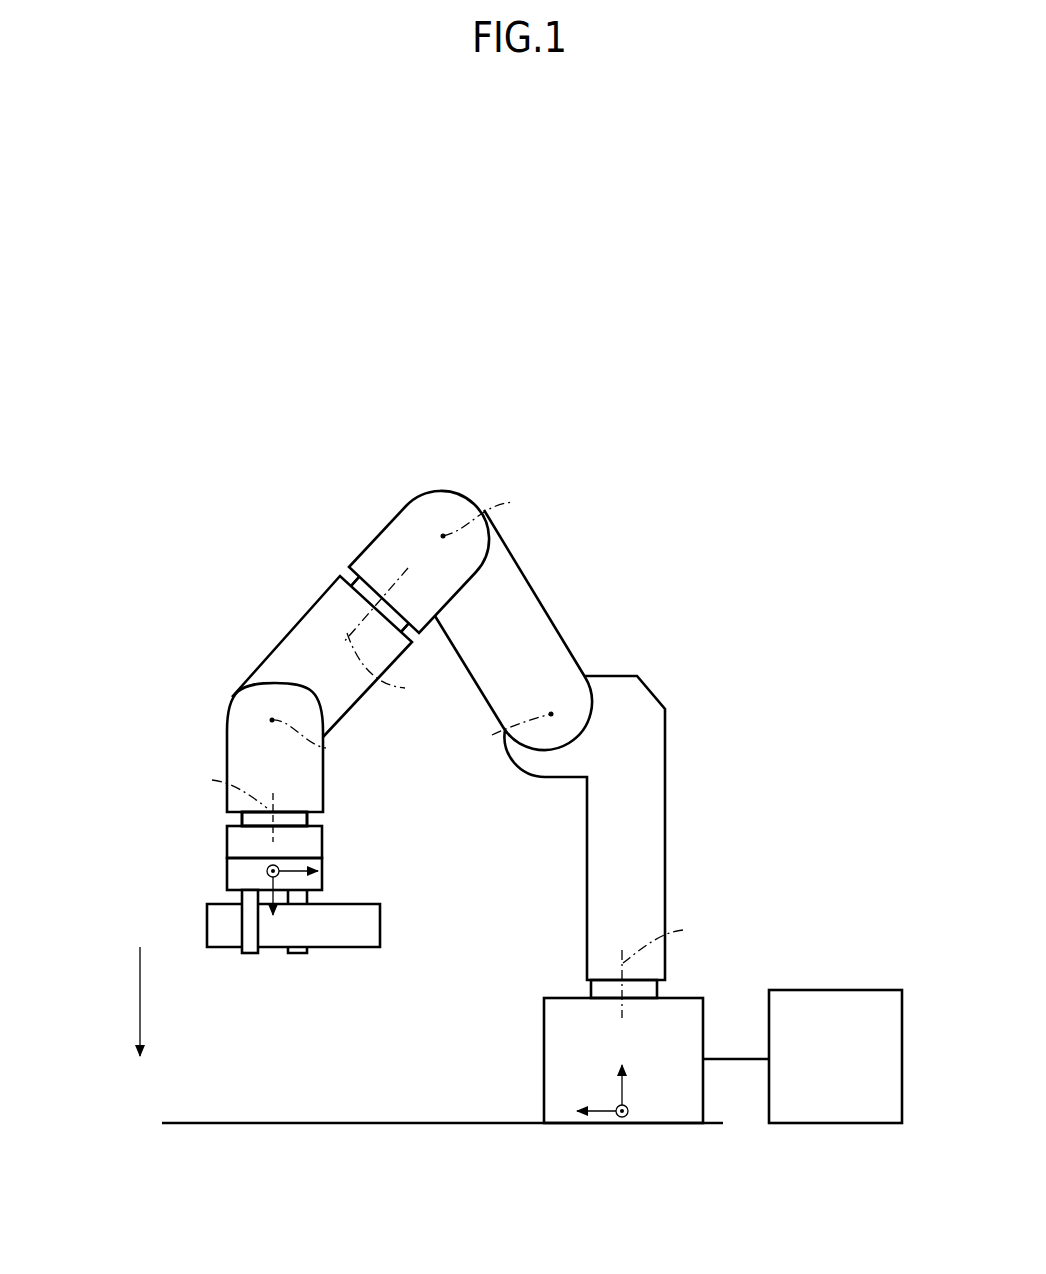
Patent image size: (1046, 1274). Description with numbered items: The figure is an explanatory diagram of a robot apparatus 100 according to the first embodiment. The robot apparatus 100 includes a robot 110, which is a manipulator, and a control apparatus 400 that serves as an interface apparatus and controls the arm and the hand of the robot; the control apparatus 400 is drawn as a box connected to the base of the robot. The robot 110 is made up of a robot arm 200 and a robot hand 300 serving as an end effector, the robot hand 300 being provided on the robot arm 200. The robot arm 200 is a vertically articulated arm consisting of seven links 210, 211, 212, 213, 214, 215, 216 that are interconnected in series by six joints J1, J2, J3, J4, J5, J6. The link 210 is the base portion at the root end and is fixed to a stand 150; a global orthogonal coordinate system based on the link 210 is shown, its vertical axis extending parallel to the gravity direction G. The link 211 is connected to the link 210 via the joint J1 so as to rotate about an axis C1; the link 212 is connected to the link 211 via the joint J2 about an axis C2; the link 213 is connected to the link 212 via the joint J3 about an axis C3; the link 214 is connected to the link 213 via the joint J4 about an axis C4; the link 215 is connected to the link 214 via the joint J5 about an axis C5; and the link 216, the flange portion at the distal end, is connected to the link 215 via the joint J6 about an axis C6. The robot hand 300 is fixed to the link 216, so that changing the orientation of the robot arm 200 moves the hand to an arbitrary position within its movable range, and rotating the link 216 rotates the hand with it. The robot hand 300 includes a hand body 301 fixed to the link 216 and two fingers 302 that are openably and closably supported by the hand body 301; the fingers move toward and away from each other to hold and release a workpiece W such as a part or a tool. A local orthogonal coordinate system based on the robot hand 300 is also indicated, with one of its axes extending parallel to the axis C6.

The robot apparatus 100 is at (534, 250).
The robot 110 is at (554, 398).
The robot arm 200 is at (458, 491).
The link 210 is at (544, 1031).
The link 211 is at (667, 843).
The link 212 is at (529, 583).
The link 213 is at (386, 527).
The link 214 is at (297, 625).
The link 215 is at (226, 770).
The link 216 is at (226, 835).
The robot hand 300 is at (223, 877).
The hand body 301 is at (322, 862).
The fingers 302 is at (250, 930).
The control apparatus 400 is at (877, 990).
The stand 150 is at (223, 1122).
The workpiece W is at (382, 925).
The gravity direction G is at (139, 997).
The joint J1 is at (658, 993).
The joint J2 is at (567, 705).
The joint J3 is at (420, 514).
The joint J4 is at (362, 596).
The joint J5 is at (255, 716).
The joint J6 is at (288, 820).
The axis C1 is at (670, 968).
The axis C2 is at (503, 731).
The axis C3 is at (494, 513).
The axis C4 is at (389, 635).
The axis C5 is at (315, 741).
The axis C6 is at (225, 806).